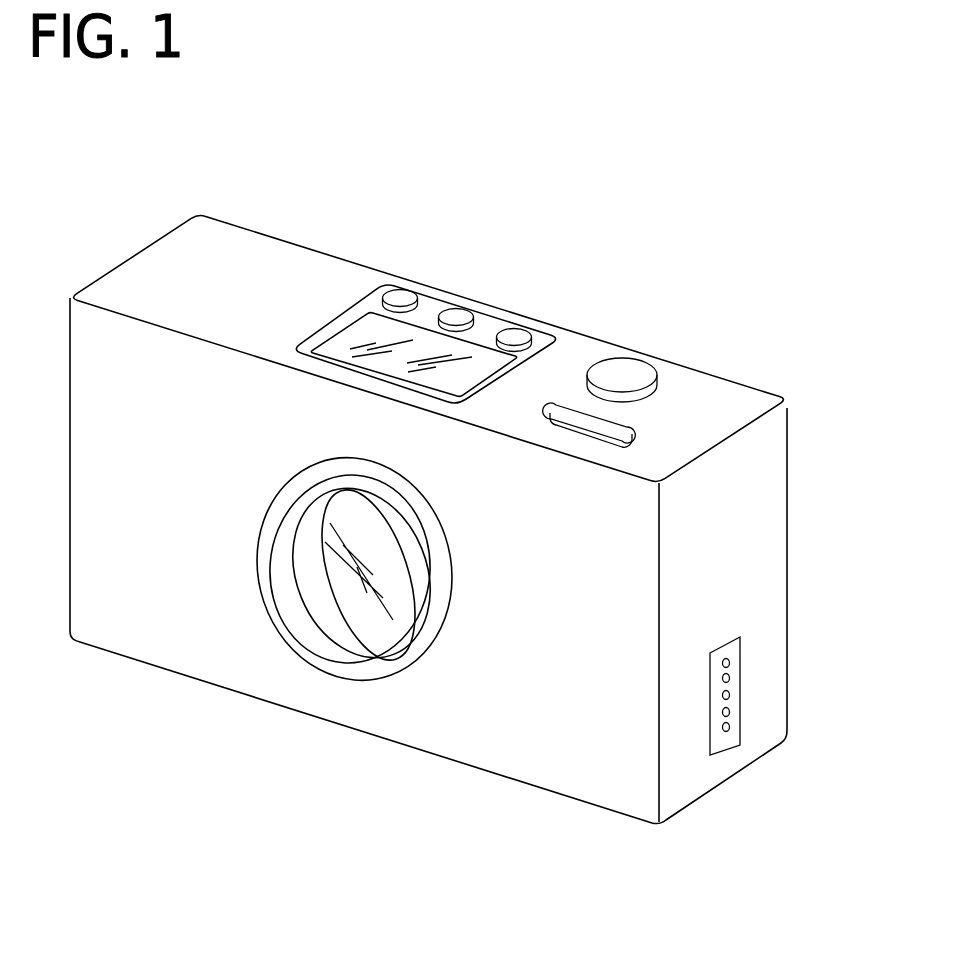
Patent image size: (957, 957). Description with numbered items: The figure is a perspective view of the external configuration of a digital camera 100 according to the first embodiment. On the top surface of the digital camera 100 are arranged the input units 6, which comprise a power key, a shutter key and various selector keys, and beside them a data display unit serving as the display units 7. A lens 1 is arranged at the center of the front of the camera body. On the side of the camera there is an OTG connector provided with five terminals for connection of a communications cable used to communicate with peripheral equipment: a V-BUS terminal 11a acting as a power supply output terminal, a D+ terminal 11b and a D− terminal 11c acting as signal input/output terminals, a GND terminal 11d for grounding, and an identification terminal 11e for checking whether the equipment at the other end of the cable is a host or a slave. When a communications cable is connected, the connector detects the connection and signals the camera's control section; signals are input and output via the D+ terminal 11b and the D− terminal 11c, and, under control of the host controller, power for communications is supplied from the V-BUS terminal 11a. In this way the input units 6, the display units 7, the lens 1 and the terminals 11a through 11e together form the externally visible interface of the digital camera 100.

The digital camera 100 is at (565, 164).
The lens 1 is at (312, 632).
The input units 6 is at (400, 296).
The display units 7 is at (342, 345).
The V-BUS terminal 11a is at (730, 663).
The D+ terminal 11b is at (730, 678).
The D− terminal 11c is at (730, 695).
The GND terminal 11d is at (730, 712).
The identification terminal 11e is at (730, 727).